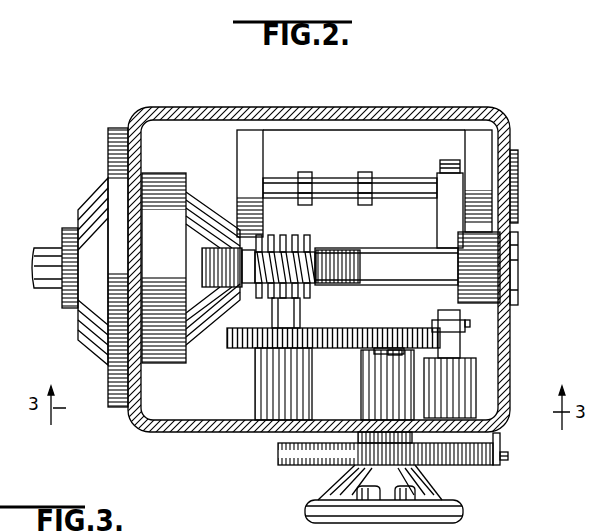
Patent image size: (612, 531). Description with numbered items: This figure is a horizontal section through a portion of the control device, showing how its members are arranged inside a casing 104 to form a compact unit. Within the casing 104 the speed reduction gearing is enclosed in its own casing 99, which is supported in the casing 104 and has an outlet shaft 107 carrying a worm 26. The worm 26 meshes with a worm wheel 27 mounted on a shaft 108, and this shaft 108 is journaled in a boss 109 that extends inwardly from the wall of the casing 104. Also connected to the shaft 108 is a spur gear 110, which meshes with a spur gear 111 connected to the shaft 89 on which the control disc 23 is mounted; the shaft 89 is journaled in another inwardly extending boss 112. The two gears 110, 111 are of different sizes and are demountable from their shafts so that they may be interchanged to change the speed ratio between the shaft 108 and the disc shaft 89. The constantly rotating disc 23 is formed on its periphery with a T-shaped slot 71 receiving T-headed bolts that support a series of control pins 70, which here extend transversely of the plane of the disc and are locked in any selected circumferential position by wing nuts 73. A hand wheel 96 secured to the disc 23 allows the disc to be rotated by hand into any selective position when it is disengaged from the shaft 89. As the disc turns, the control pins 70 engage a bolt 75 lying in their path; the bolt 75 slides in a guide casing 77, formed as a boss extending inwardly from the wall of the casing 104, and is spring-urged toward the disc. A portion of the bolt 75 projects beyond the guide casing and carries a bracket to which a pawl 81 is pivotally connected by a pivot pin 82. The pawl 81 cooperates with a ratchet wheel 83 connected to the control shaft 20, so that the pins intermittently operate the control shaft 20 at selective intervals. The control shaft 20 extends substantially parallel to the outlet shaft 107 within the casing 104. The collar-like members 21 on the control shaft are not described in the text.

The control shaft 20 is at (335, 178).
The collars 21 is at (368, 172).
The control disc 23 is at (473, 465).
The worm 26 is at (292, 240).
The worm wheel 27 is at (342, 250).
The control pins 70 is at (500, 437).
The T-shaped slot 71 is at (283, 448).
The wing nuts 73 is at (508, 458).
The bolt 75 is at (448, 347).
The guide casing 77 is at (462, 380).
The pawl 81 is at (450, 219).
The pivot pin 82 is at (460, 323).
The ratchet wheel 83 is at (449, 159).
The shaft 89 is at (385, 349).
The hand wheel 96 is at (465, 512).
The casing 99 is at (95, 207).
The casing 104 is at (506, 350).
The outlet shaft 107 is at (394, 277).
The shaft 108 is at (296, 310).
The boss 109 is at (258, 400).
The spur gear 110 is at (236, 350).
The spur gear 111 is at (393, 354).
The boss 112 is at (393, 398).